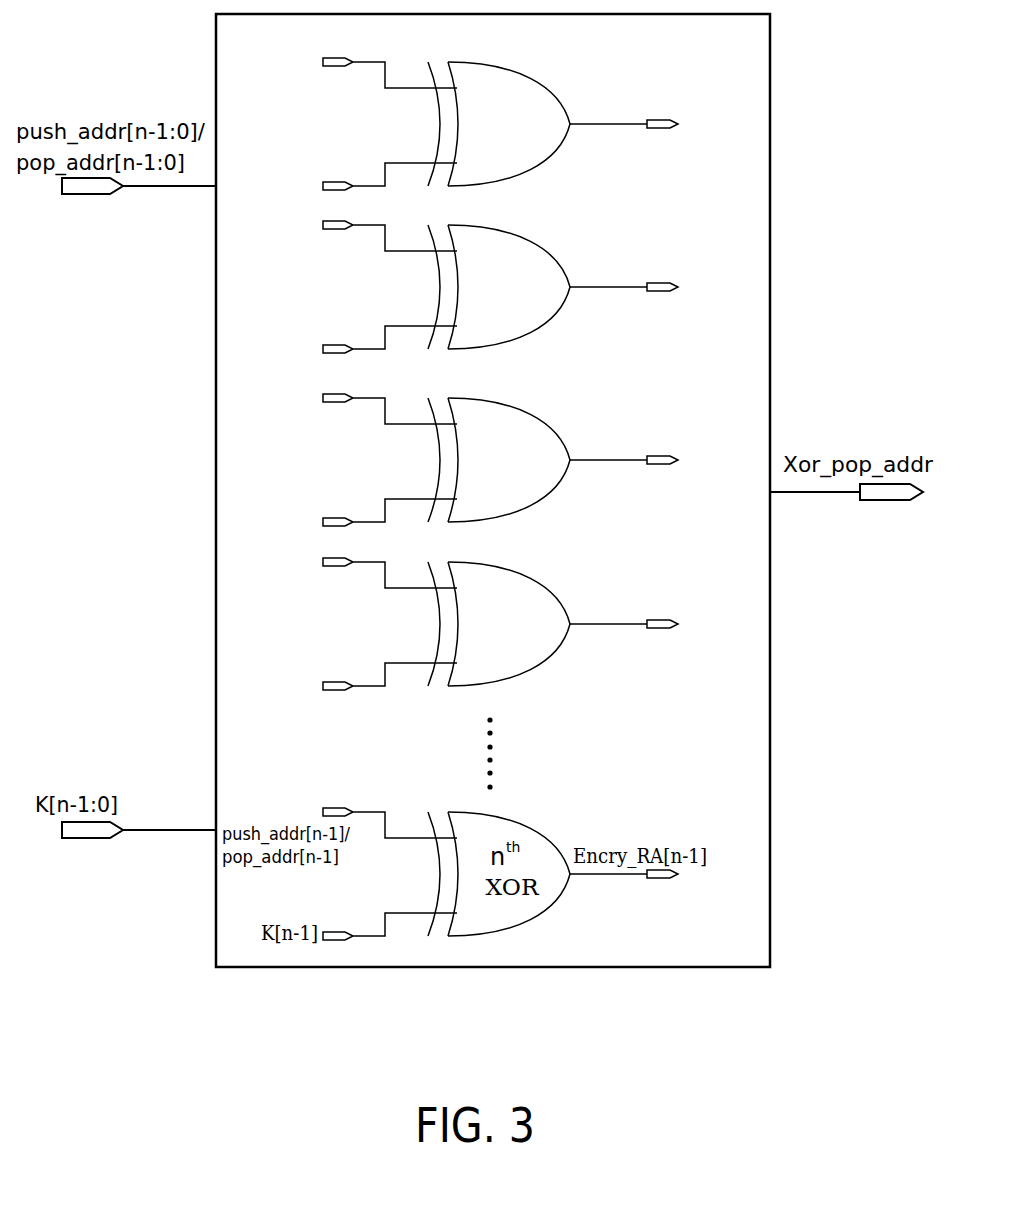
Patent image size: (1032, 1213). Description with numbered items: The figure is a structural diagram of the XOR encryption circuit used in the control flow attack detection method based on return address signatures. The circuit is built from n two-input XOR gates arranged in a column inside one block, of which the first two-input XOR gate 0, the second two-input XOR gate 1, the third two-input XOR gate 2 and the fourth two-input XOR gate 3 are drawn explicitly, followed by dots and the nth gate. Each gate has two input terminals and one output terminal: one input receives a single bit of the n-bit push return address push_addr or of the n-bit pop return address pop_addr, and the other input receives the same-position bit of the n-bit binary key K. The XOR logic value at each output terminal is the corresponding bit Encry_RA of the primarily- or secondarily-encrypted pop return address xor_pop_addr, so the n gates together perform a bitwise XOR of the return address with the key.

The first two-input XOR gate 0 is at (456, 126).
The second two-input XOR gate 1 is at (456, 289).
The third two-input XOR gate 2 is at (456, 463).
The fourth two-input XOR gate 3 is at (456, 626).